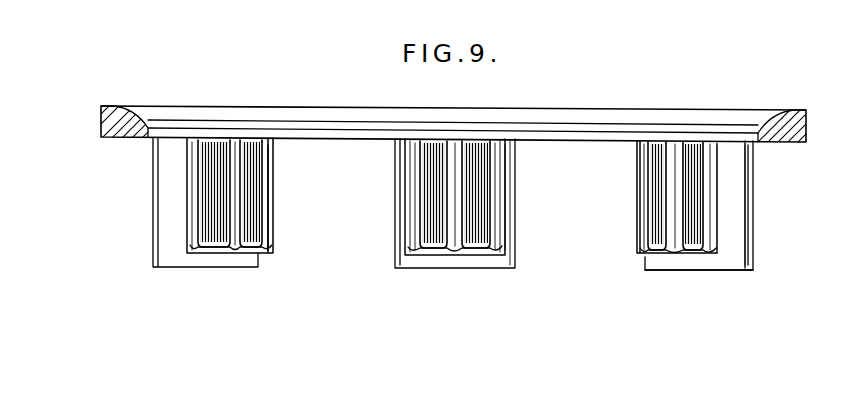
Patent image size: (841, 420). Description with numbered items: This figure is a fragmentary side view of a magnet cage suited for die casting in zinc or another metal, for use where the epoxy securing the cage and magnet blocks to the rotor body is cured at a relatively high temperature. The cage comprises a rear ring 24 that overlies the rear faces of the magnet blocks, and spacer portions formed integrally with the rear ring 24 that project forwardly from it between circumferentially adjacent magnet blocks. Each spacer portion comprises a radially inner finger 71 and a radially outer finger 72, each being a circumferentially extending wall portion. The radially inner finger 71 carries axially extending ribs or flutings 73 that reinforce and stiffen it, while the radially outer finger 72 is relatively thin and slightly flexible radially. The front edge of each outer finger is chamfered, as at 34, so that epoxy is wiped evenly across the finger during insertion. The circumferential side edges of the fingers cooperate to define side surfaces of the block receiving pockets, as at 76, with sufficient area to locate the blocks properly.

The rear ring 24 is at (338, 115).
The chamfer 34 is at (752, 270).
The radially inner finger 71 is at (273, 217).
The radially outer finger 72 is at (172, 203).
The ribs or flutings 73 is at (253, 247).
The side surfaces of the block receiving pockets 76 is at (497, 210).